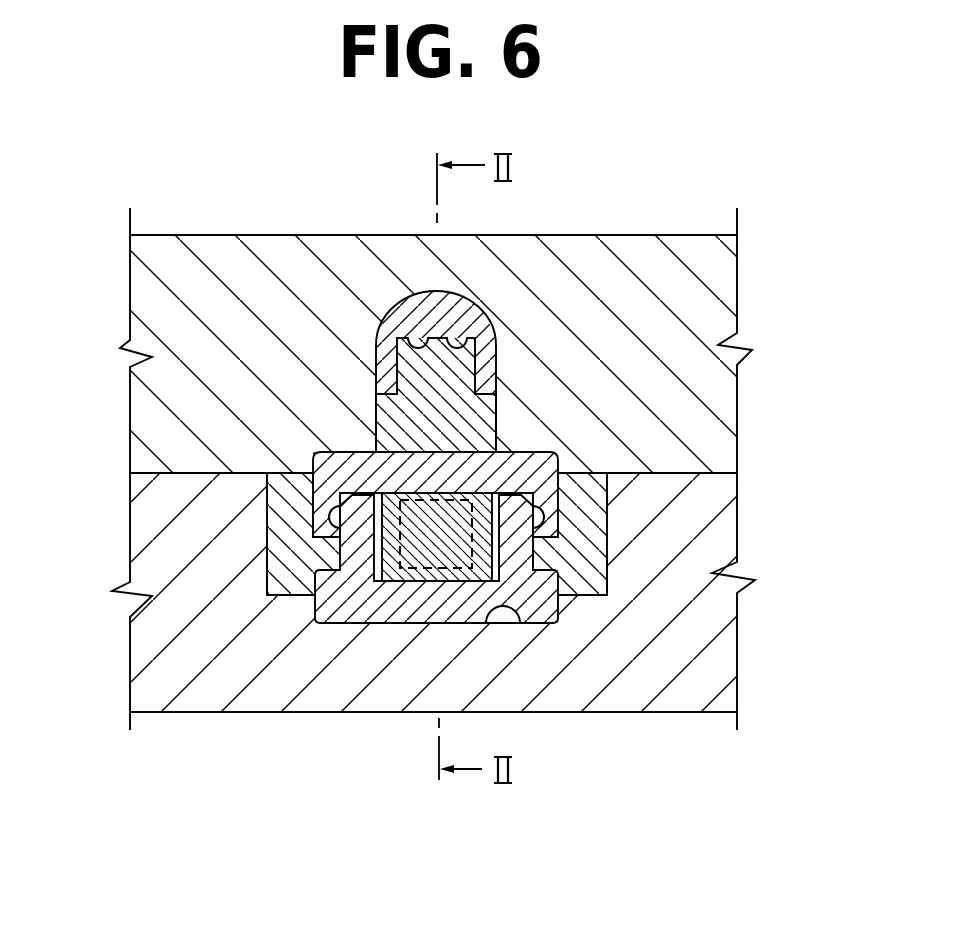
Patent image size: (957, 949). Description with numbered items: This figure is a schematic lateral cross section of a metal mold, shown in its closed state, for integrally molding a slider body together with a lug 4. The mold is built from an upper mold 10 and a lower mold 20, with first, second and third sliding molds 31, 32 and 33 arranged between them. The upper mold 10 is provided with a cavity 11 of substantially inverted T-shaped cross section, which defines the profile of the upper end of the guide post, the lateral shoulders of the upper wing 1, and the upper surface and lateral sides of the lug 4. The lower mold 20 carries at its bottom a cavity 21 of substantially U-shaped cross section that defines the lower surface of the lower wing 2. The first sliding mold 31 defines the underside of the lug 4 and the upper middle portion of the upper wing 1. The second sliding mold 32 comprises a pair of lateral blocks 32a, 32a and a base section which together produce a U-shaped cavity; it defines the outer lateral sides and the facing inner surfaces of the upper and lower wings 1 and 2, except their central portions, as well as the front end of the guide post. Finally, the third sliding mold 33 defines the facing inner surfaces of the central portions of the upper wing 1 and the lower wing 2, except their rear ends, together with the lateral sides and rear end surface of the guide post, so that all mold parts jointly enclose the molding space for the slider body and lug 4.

The upper mold 10 is at (712, 272).
The lower mold 20 is at (705, 655).
The lug 4 is at (388, 313).
The cavity 11 is at (497, 396).
The first sliding mold 31 is at (363, 412).
The upper wing 1 is at (325, 496).
The second sliding mold 32 is at (598, 558).
The lateral block 32a is at (287, 565).
The lower wing 2 is at (333, 609).
The cavity 21 is at (500, 606).
The third sliding mold 33 is at (432, 556).